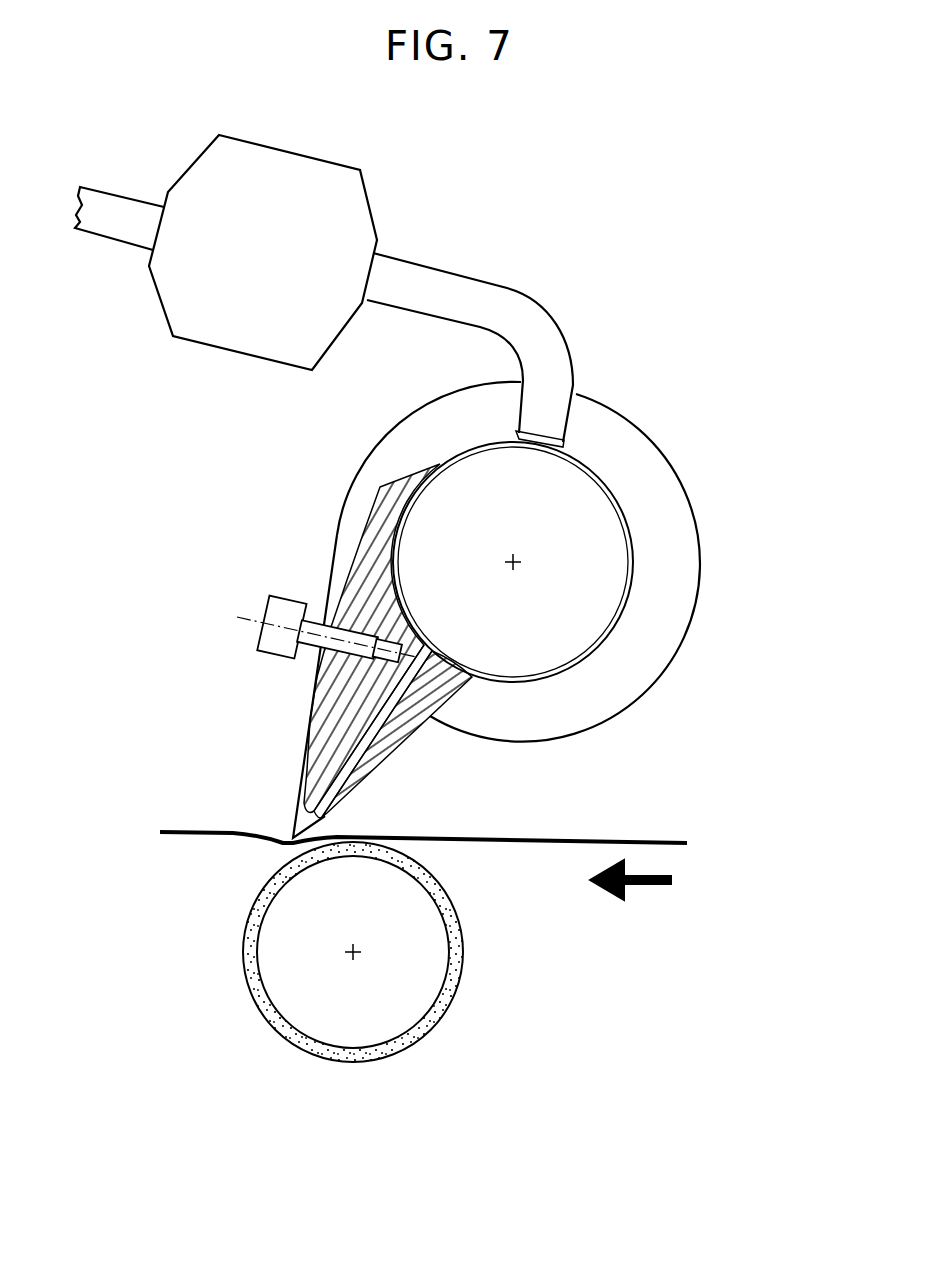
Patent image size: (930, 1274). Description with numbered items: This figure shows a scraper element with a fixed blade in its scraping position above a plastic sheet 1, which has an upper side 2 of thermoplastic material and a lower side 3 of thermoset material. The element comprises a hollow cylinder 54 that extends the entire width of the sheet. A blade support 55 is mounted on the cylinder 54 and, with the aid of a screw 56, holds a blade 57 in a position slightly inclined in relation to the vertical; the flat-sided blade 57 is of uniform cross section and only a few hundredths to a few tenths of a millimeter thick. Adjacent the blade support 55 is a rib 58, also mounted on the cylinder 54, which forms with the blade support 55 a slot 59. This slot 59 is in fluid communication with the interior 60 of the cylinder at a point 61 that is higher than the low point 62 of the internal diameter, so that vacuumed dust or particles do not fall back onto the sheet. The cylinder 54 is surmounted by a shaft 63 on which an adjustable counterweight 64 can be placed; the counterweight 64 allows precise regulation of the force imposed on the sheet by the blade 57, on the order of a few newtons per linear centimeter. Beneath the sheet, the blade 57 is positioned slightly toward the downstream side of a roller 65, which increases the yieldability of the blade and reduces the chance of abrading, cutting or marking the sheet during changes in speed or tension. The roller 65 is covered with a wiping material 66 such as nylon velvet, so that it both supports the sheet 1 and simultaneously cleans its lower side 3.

The plastic sheet 1 is at (602, 842).
The upper side 2 is at (525, 835).
The lower side 3 is at (532, 850).
The hollow cylinder 54 is at (395, 440).
The blade support 55 is at (373, 585).
The screw 56 is at (283, 648).
The blade 57 is at (298, 792).
The rib 58 is at (365, 763).
The slot 59 is at (405, 739).
The interior of the cylinder 60 is at (588, 505).
The communication point 61 is at (449, 649).
The low point of the internal diameter 62 is at (516, 669).
The shaft 63 is at (510, 313).
The adjustable counterweight 64 is at (343, 207).
The roller 65 is at (333, 1025).
The wiping material 66 is at (413, 1051).